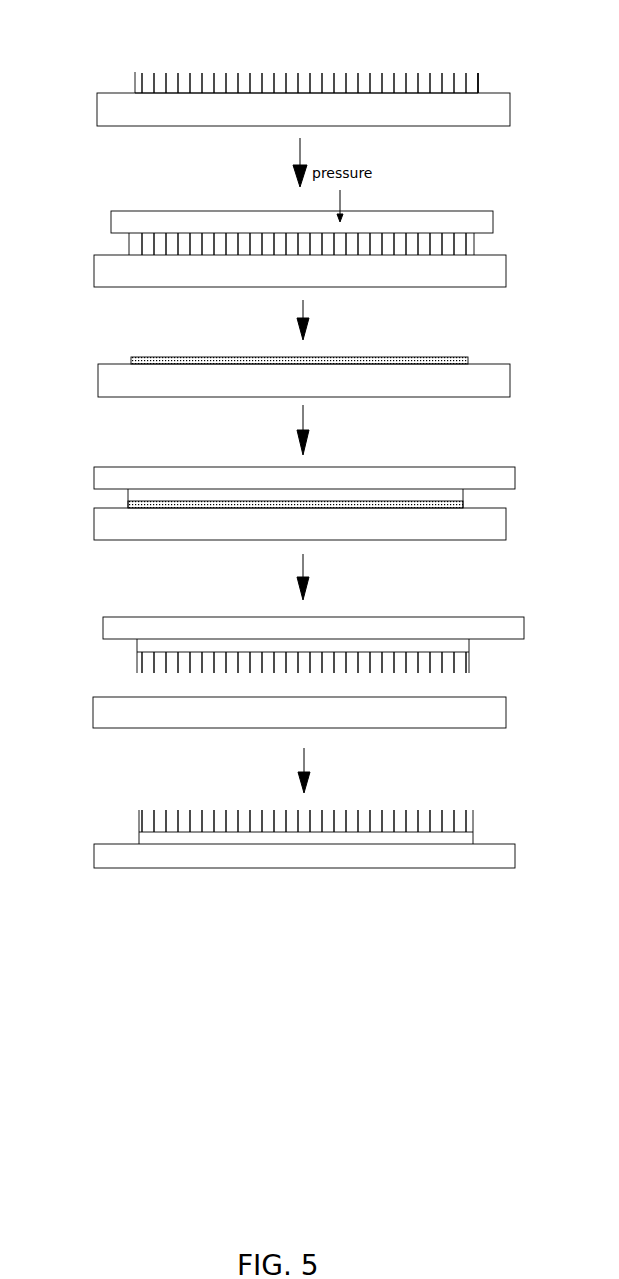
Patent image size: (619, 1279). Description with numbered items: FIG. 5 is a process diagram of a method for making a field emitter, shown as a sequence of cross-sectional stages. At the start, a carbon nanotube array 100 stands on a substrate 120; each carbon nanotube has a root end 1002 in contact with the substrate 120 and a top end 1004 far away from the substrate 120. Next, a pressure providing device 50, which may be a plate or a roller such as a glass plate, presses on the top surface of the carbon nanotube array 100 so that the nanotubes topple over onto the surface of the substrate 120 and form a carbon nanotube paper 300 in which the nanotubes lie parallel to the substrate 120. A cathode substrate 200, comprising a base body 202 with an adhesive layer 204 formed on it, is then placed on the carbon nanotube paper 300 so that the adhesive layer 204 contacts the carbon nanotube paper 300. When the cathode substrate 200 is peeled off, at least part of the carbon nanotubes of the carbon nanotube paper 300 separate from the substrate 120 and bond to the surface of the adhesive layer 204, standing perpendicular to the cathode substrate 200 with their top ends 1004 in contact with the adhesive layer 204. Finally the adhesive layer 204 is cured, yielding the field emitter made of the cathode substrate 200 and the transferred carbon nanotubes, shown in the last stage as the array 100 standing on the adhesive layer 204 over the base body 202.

The carbon nanotube array 100 is at (165, 72).
The root end 1002 is at (478, 94).
The top end 1004 is at (478, 73).
The substrate 120 is at (478, 112).
The pressure providing device 50 is at (466, 211).
The carbon nanotube paper 300 is at (461, 357).
The cathode substrate 200 is at (55, 500).
The base body 202 is at (123, 467).
The adhesive layer 204 is at (143, 494).